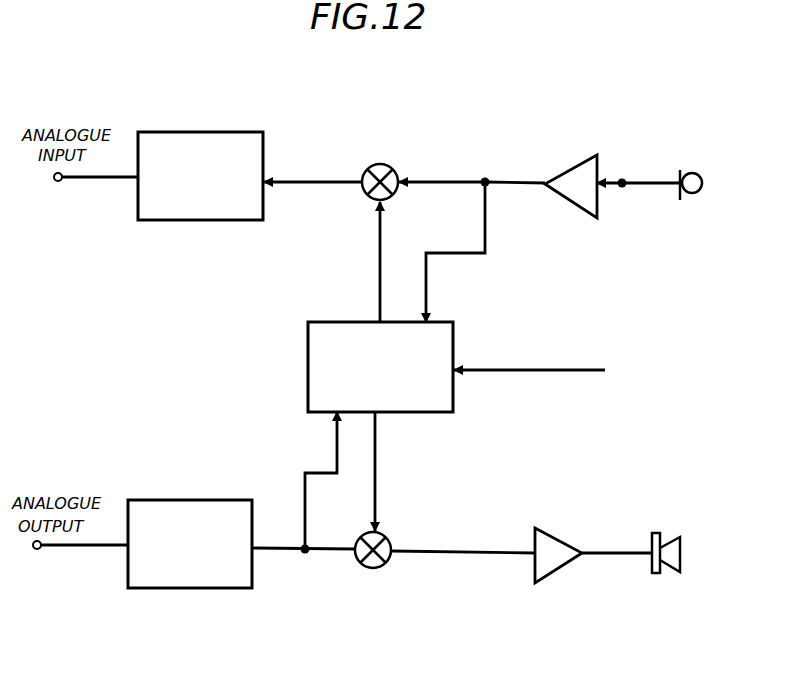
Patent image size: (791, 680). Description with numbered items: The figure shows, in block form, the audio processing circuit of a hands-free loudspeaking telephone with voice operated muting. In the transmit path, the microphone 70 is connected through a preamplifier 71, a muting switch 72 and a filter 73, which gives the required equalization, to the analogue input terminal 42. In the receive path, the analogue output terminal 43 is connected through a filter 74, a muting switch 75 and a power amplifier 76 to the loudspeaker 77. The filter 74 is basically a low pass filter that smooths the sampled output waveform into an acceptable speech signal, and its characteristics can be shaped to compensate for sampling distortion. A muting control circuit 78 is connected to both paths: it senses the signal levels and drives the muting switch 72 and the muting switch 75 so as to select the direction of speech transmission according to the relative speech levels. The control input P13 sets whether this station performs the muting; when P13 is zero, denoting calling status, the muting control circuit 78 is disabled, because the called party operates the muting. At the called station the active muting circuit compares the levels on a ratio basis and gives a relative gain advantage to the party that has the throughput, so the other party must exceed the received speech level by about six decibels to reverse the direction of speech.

The analogue input terminal 42 is at (60, 182).
The analogue output terminal 43 is at (40, 549).
The microphone 70 is at (688, 172).
The preamplifier 71 is at (574, 167).
The muting switch 72 is at (375, 163).
The filter 73 is at (196, 132).
The filter 74 is at (187, 590).
The muting switch 75 is at (369, 568).
The power amplifier 76 is at (558, 570).
The loudspeaker 77 is at (657, 575).
The muting control circuit 78 is at (432, 412).
The calling status signal P13 is at (549, 373).